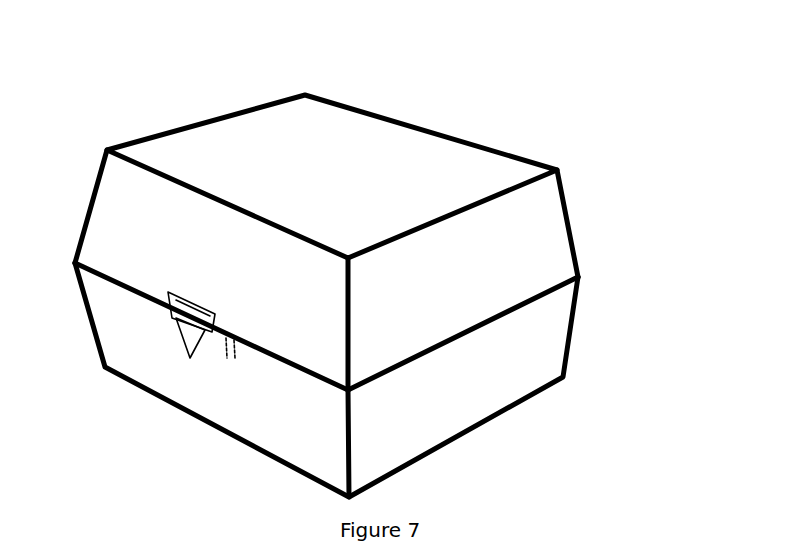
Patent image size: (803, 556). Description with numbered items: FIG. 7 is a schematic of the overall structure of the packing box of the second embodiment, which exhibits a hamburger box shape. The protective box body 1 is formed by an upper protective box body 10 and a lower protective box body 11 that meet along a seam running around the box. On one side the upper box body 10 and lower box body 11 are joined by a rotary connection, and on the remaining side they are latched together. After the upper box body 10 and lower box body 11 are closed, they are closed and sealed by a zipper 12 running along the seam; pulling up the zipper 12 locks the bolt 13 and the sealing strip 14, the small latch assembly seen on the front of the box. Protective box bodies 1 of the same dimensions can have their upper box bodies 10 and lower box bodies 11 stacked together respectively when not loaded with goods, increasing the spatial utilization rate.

The protective box body 1 is at (398, 251).
The upper protective box body 10 is at (518, 255).
The lower protective box body 11 is at (533, 360).
The zipper 12 is at (283, 357).
The bolt 13 is at (170, 292).
The sealing strip 14 is at (203, 303).